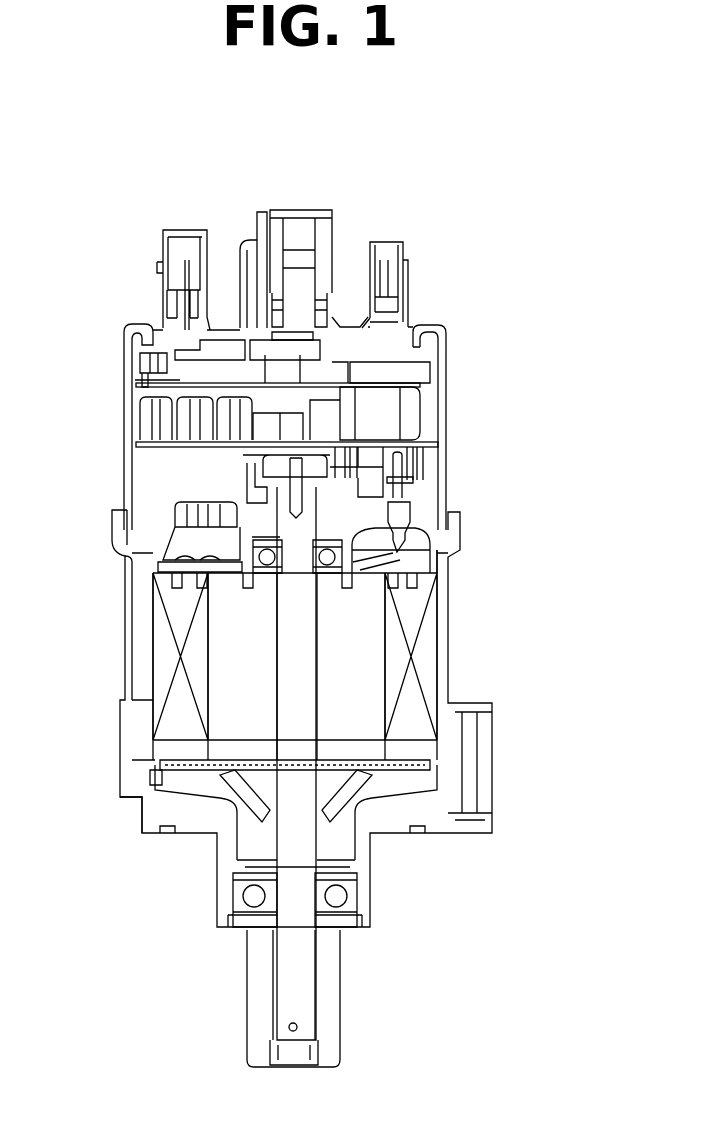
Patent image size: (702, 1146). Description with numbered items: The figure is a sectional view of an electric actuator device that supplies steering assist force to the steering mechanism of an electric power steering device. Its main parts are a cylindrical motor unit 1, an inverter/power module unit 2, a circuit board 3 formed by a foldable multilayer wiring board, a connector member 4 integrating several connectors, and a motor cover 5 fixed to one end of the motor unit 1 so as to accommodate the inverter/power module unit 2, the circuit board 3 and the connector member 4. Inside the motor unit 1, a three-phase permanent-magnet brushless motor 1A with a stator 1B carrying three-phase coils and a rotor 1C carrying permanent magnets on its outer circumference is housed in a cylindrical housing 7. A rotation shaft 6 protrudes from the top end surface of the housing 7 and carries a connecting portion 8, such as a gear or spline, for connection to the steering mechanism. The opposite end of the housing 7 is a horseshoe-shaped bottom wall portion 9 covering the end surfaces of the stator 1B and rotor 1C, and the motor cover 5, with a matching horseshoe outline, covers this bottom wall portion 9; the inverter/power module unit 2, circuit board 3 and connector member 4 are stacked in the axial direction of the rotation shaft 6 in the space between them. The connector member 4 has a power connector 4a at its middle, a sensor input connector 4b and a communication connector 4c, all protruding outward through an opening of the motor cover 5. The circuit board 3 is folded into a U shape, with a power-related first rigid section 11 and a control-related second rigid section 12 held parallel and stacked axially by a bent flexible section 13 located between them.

The motor unit 1 is at (458, 553).
The motor 1A is at (366, 671).
The stator 1B is at (425, 677).
The rotor 1C is at (337, 632).
The inverter/power module unit 2 is at (436, 469).
The circuit board 3 is at (426, 388).
The connector member 4 is at (325, 258).
The power connector 4a is at (313, 210).
The sensor input connector 4b is at (405, 252).
The communication connector 4c is at (185, 228).
The motor cover 5 is at (452, 330).
The rotation shaft 6 is at (300, 845).
The housing 7 is at (150, 655).
The connecting portion 8 is at (328, 1008).
The bottom wall portion 9 is at (180, 497).
The first rigid section 11 is at (165, 450).
The second rigid section 12 is at (140, 380).
The flexible section 13 is at (425, 412).